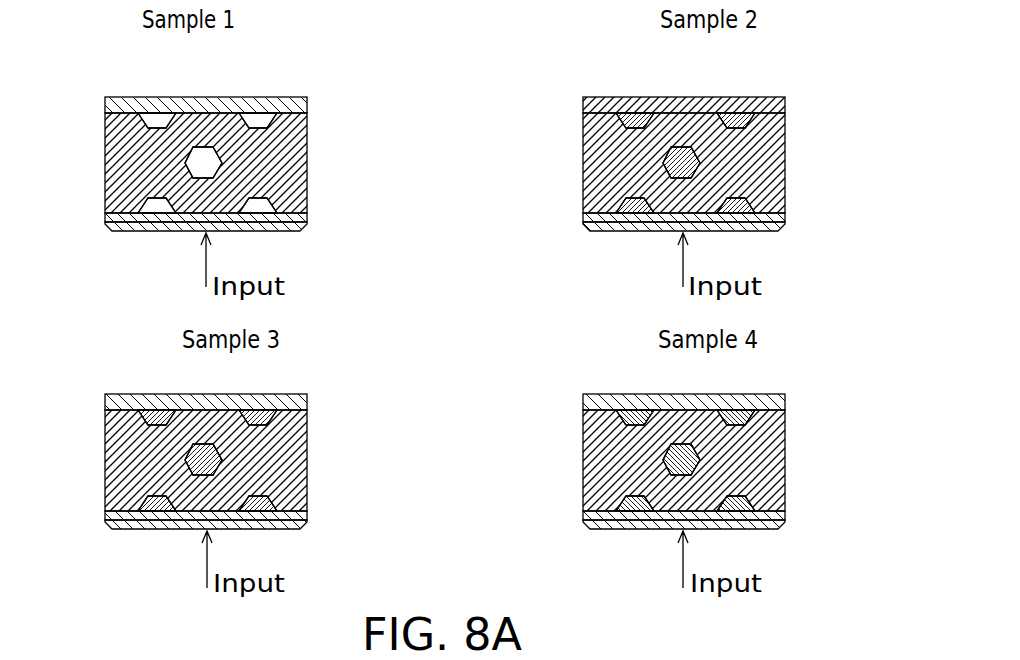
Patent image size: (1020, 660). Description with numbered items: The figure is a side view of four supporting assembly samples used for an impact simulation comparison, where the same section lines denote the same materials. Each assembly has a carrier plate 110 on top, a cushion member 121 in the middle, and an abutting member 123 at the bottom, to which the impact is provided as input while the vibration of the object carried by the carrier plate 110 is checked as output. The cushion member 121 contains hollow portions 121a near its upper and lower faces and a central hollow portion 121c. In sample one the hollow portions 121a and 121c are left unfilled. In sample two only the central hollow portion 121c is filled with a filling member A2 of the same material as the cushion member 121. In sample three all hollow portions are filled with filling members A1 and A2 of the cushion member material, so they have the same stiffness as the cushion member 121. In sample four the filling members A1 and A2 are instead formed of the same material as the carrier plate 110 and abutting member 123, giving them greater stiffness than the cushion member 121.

The carrier plate 110 is at (124, 101).
The cushion member 121 is at (117, 163).
The hollow portions 121a is at (252, 119).
The central hollow portion 121c is at (215, 157).
The abutting member 123 is at (161, 229).
The filling members A1 is at (146, 417).
The filling member A2 is at (682, 157).